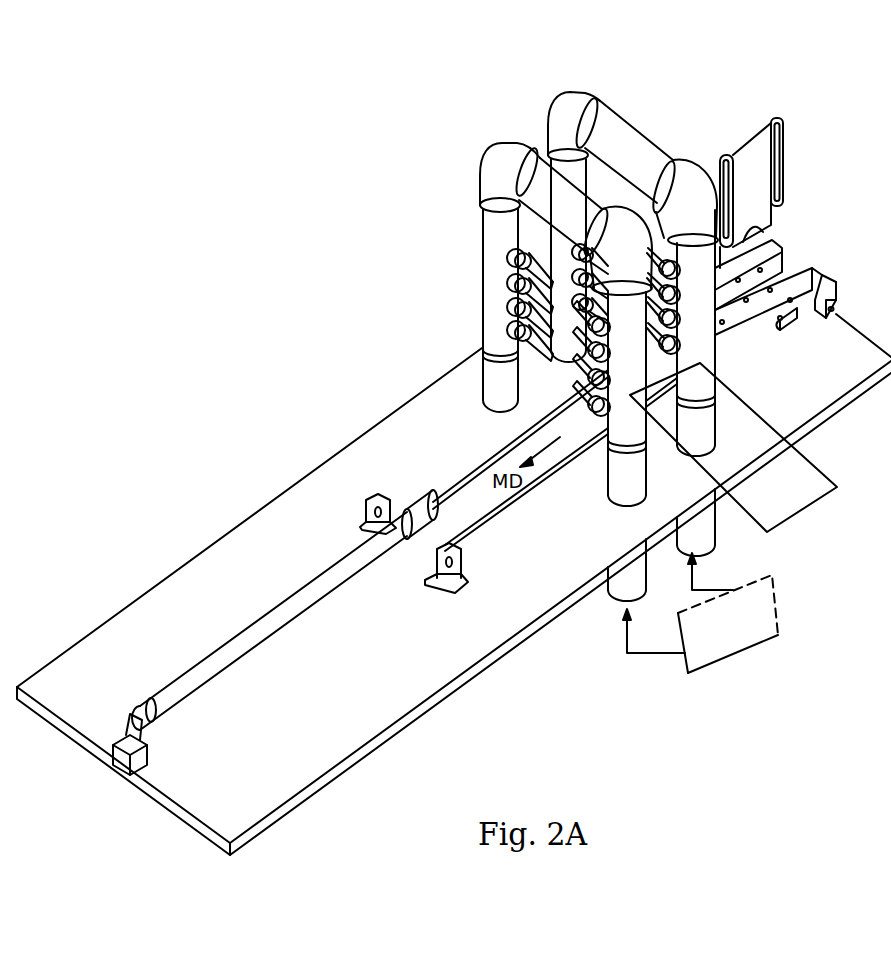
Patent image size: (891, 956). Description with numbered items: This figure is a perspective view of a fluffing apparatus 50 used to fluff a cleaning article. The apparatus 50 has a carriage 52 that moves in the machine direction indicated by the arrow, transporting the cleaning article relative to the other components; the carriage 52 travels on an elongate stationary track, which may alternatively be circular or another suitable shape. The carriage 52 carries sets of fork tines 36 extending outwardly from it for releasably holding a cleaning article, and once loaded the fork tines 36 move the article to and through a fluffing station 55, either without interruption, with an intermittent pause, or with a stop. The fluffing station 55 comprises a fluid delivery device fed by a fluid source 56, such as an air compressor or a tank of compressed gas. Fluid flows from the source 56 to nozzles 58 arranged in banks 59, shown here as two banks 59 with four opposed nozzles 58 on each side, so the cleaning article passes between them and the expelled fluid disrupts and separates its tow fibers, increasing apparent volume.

The fluffing apparatus 50 is at (707, 698).
The fluffing station 55 is at (508, 118).
The nozzles 58 is at (510, 318).
The fork tines 36 is at (770, 120).
The carriage 52 is at (782, 250).
The banks 59 is at (803, 510).
The fluid source 56 is at (778, 630).